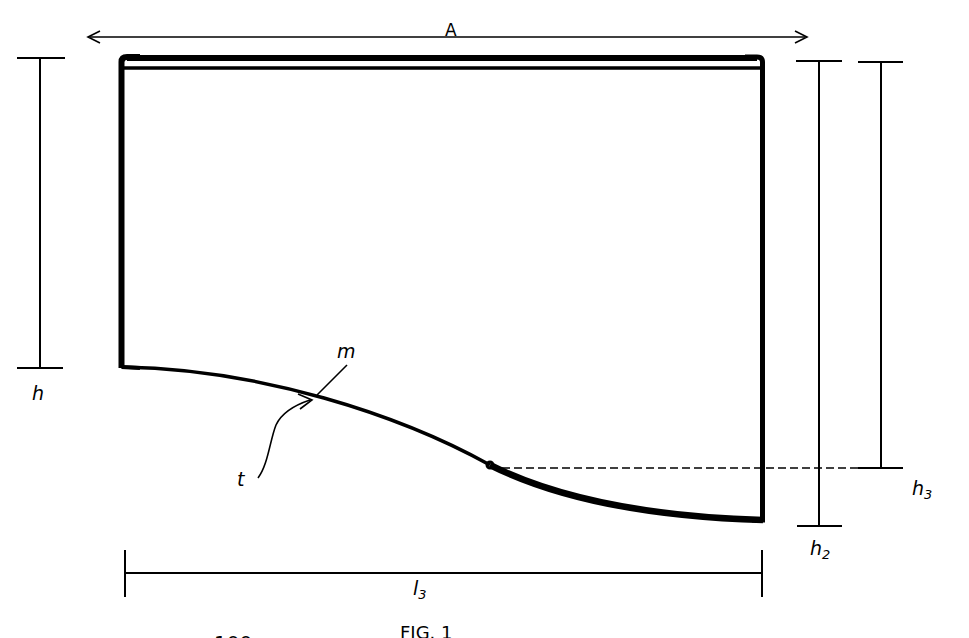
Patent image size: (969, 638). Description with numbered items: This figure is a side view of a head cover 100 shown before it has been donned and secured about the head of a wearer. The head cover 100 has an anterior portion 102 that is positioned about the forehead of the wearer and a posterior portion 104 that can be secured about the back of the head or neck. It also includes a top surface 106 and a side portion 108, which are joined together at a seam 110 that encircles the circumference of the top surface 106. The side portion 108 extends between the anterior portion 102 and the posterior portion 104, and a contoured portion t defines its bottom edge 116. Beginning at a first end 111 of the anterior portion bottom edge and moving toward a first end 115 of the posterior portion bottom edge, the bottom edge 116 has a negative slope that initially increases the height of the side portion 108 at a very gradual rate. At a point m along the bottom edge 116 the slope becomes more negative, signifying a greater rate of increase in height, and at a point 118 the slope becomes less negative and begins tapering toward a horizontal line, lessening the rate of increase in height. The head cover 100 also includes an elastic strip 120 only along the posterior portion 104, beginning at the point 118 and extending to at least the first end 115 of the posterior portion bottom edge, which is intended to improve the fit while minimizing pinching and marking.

The head cover 100 is at (160, 430).
The anterior portion 102 is at (123, 195).
The posterior portion 104 is at (762, 228).
The top surface 106 is at (313, 58).
The side portion 108 is at (443, 216).
The seam 110 is at (368, 68).
The first end of anterior portion bottom edge 111 is at (120, 368).
The first end of posterior portion bottom edge 115 is at (760, 522).
The bottom edge 116 is at (428, 438).
The point 118 is at (490, 465).
The elastic strip 120 is at (577, 500).